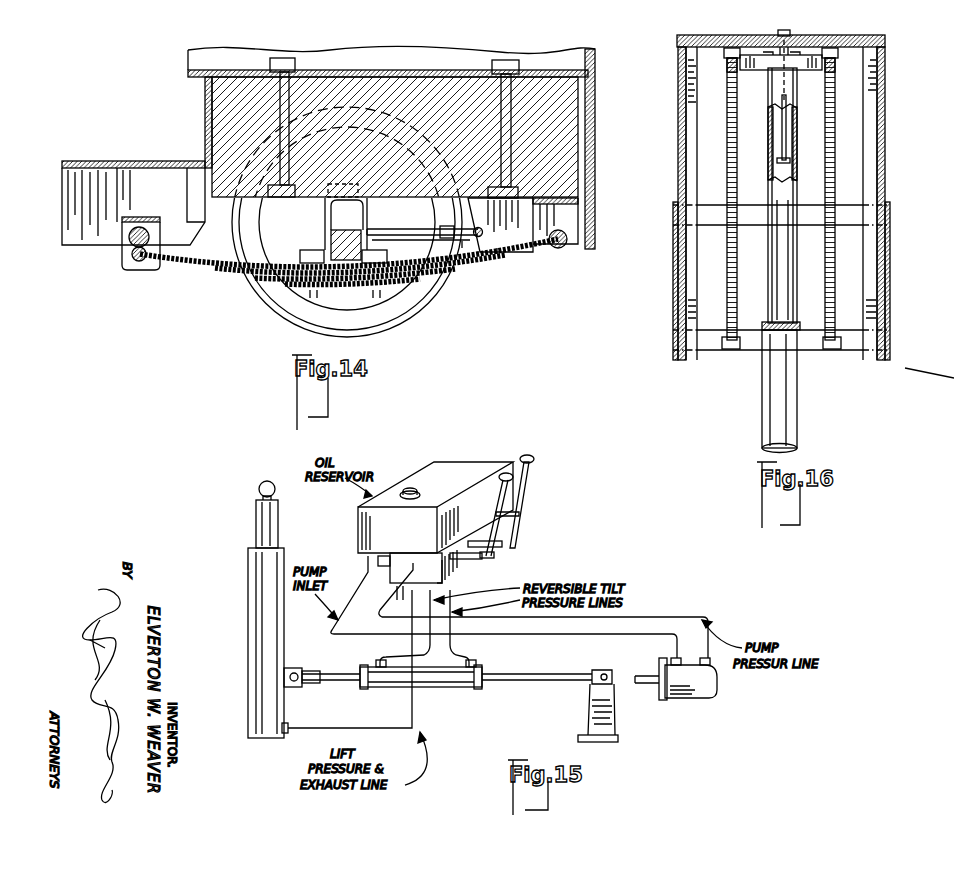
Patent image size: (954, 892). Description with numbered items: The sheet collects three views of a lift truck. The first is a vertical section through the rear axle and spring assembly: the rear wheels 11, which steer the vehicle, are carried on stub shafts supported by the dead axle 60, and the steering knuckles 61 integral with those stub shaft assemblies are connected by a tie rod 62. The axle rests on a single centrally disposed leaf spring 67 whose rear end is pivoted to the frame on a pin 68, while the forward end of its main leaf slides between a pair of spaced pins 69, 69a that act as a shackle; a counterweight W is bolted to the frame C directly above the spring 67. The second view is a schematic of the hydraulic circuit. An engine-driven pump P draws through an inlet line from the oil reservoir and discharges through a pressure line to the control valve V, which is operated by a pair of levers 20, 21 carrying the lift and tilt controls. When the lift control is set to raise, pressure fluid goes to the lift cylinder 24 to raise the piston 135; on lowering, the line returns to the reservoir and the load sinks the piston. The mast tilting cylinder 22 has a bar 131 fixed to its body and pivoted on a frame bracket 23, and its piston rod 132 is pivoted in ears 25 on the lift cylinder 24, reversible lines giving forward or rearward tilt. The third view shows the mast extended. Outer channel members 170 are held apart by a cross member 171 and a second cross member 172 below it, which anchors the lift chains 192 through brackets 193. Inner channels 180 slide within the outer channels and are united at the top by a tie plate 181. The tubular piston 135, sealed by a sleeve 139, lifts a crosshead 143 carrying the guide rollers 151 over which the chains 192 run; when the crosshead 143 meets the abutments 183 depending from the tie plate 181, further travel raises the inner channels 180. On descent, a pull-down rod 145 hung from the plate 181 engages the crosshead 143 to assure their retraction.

In FIG. 14, the rear wheels 11 is at (418, 300).
In FIG. 14, the dead axle 60 is at (360, 218).
In FIG. 14, the steering knuckles 61 is at (432, 236).
In FIG. 14, the tie rod 62 is at (470, 250).
In FIG. 14, the leaf spring 67 is at (232, 278).
In FIG. 14, the pin 68 is at (564, 248).
In FIG. 14, the spaced pin 69 is at (150, 219).
In FIG. 14, the spaced pin 69a is at (140, 262).
In FIG. 14, the counterweight W is at (548, 116).
In FIG. 14, the frame C is at (596, 150).
In FIG. 16, the tie plate 181 is at (888, 38).
In FIG. 16, the inner channels 180 is at (678, 74).
In FIG. 16, the outer channel members 170 is at (676, 300).
In FIG. 16, the cross member 171 is at (842, 218).
In FIG. 16, the second cross member 172 is at (848, 344).
In FIG. 16, the lift chains 192 is at (727, 258).
In FIG. 16, the guide rollers 151 is at (845, 60).
In FIG. 16, the brackets 193 is at (729, 350).
In FIG. 16, the crosshead member 143 is at (762, 70).
In FIG. 16, the abutments 183 is at (798, 70).
In FIG. 16, the tubular piston 135 is at (776, 284).
In FIG. 15, the tubular piston 135 is at (258, 512).
In FIG. 16, the pull-down rod 145 is at (788, 135).
In FIG. 16, the sleeve 139 is at (776, 320).
In FIG. 16, the lift cylinder 24 is at (802, 391).
In FIG. 15, the lift cylinder 24 is at (248, 598).
In FIG. 15, the ears 25 is at (294, 670).
In FIG. 15, the piston rod 132 is at (345, 663).
In FIG. 15, the mast tilting cylinder 22 is at (442, 688).
In FIG. 15, the bar 131 is at (556, 676).
In FIG. 15, the bracket 23 is at (612, 716).
In FIG. 15, the pump P is at (692, 700).
In FIG. 15, the control valve V is at (455, 570).
In FIG. 15, the lever 20 is at (528, 479).
In FIG. 15, the lever 21 is at (505, 492).